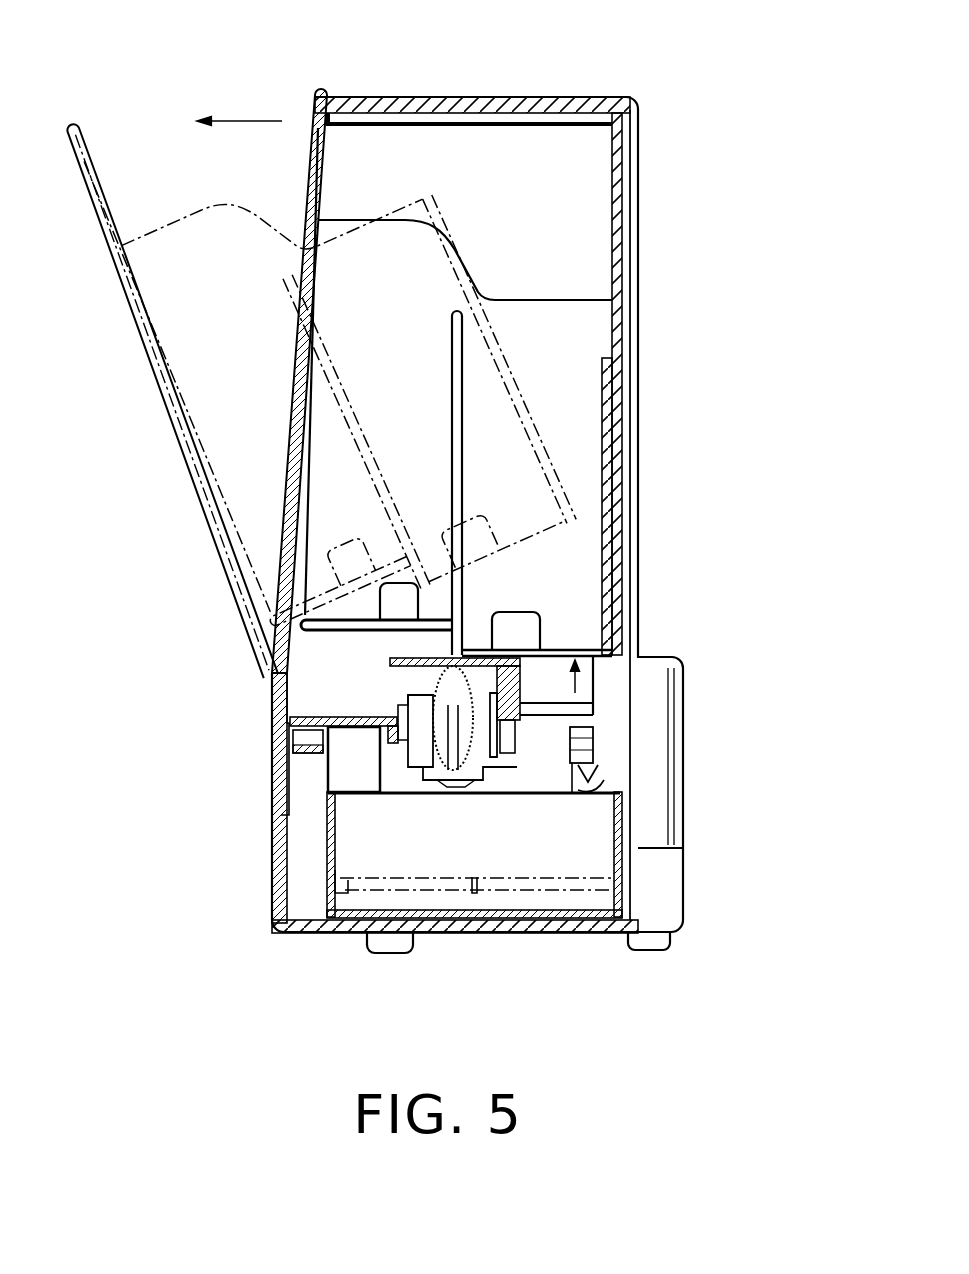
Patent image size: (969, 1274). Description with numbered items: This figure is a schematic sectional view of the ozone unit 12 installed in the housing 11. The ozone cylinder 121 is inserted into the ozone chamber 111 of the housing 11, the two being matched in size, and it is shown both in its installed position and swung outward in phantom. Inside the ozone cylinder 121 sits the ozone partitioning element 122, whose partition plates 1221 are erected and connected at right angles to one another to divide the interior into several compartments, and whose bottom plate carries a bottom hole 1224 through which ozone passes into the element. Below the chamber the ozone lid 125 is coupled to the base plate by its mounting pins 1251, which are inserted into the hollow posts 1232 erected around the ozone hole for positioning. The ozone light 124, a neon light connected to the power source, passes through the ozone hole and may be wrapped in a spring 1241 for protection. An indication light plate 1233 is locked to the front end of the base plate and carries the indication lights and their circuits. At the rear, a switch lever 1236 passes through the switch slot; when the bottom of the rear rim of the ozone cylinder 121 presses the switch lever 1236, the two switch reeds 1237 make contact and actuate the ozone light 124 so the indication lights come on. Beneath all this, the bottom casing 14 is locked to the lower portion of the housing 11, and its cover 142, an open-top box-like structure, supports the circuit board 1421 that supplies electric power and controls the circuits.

The housing 11 is at (593, 103).
The ozone chamber 111 is at (490, 143).
The ozone unit 12 is at (312, 178).
The ozone cylinder 121 is at (313, 137).
The ozone partitioning element 122 is at (560, 302).
The partition plates 1221 is at (457, 425).
The bottom hole 1224 is at (307, 700).
The mounting pins 1251 is at (600, 624).
The ozone lid 125 is at (300, 706).
The indication light plate 1233 is at (285, 762).
The ozone light 124 is at (427, 772).
The spring 1241 is at (490, 767).
The switch lever 1236 is at (600, 687).
The hollow posts 1232 is at (620, 712).
The switch reeds 1237 is at (590, 787).
The bottom casing 14 is at (302, 937).
The cover 142 is at (330, 878).
The circuit board 1421 is at (443, 890).